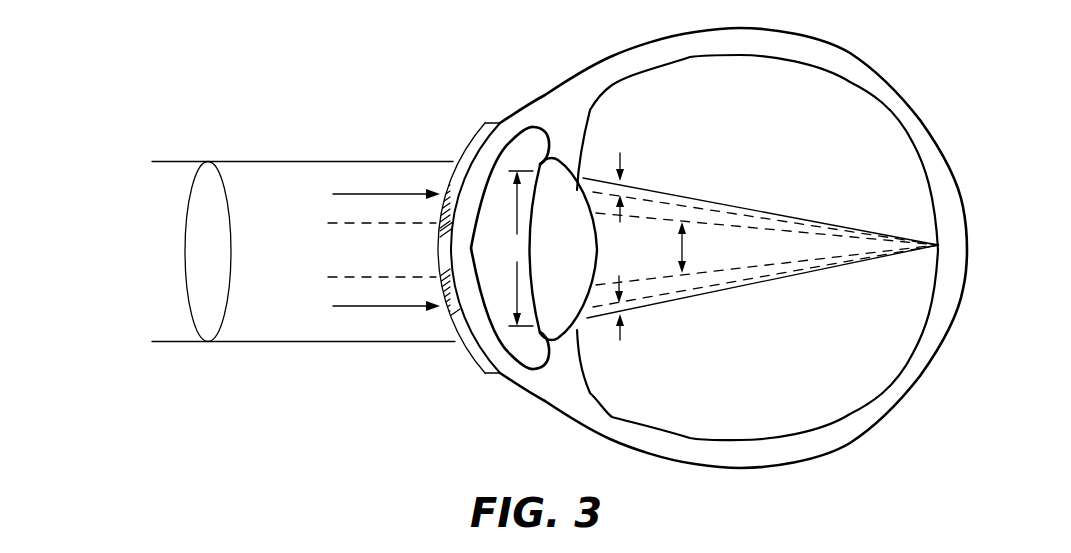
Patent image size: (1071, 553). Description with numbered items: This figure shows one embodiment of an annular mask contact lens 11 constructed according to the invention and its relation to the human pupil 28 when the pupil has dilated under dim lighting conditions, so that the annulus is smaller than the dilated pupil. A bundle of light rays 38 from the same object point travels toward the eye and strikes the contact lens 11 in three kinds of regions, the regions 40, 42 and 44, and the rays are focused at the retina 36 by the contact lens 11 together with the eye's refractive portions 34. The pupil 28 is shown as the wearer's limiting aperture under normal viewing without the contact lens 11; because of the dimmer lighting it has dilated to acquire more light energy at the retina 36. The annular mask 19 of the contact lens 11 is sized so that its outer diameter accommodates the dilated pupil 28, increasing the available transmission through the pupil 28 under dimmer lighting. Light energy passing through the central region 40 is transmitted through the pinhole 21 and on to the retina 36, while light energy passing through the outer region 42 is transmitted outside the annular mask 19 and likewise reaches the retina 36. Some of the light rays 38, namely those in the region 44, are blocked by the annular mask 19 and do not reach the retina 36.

The contact lens 11 is at (477, 140).
The annular mask 19 is at (450, 312).
The pinhole 21 is at (446, 232).
The pupil 28 is at (515, 248).
The eye's refractive portions 34 is at (575, 258).
The retina 36 is at (934, 245).
The light rays 38 is at (247, 225).
The region 40 is at (342, 260).
The region 42 is at (342, 187).
The region 44 is at (342, 217).